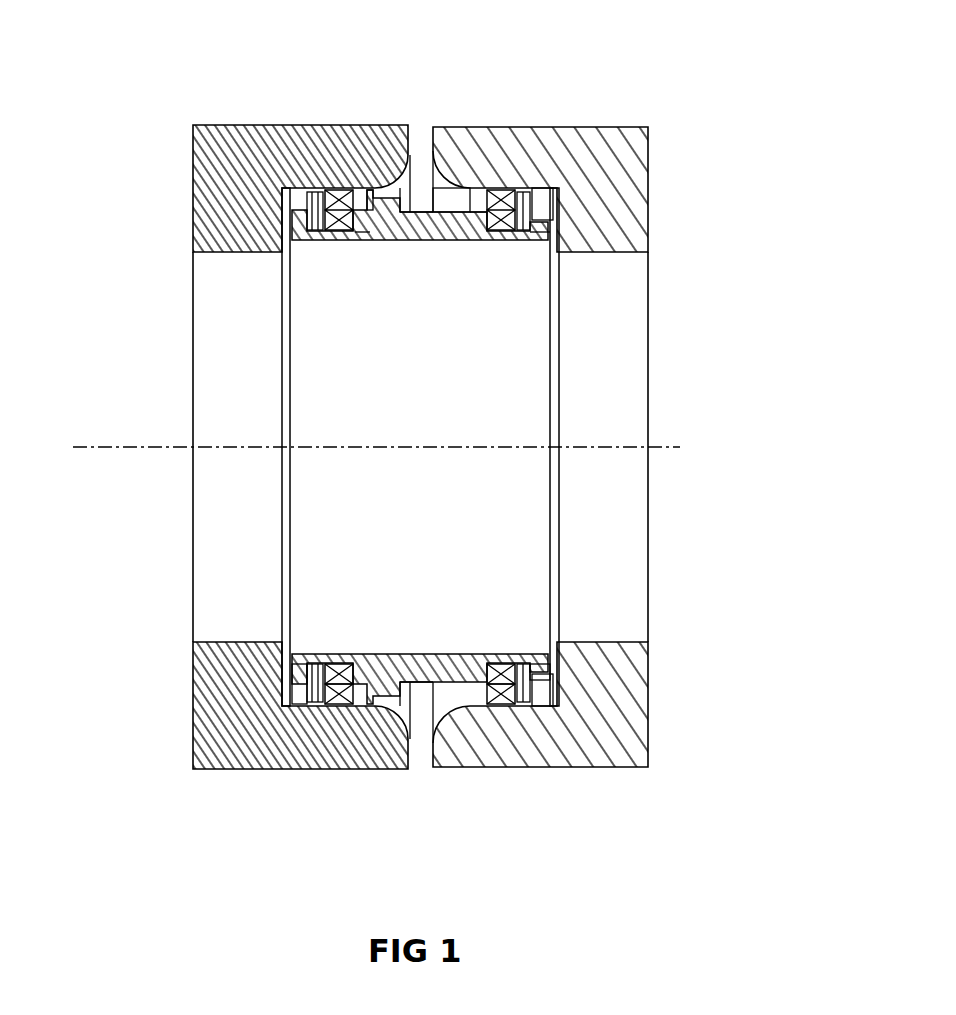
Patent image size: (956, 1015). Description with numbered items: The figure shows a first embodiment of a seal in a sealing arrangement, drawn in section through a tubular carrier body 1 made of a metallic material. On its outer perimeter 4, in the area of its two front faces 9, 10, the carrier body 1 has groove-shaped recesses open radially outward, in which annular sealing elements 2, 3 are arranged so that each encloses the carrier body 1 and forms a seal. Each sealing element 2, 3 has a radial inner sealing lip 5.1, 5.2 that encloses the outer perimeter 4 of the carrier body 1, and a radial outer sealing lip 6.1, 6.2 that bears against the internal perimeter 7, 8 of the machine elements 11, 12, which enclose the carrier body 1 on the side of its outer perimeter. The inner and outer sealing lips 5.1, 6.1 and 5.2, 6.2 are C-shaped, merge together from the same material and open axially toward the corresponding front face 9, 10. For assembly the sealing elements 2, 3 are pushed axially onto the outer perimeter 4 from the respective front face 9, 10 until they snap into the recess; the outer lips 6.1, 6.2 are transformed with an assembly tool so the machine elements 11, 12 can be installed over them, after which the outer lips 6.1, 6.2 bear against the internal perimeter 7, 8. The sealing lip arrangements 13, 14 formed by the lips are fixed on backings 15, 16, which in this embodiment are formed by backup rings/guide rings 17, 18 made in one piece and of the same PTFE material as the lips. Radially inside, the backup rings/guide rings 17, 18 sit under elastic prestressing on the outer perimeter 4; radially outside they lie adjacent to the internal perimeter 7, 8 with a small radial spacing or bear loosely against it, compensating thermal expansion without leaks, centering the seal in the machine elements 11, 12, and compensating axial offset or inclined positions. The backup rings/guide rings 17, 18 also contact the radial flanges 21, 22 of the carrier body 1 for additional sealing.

The carrier body 1 is at (404, 228).
The sealing element 2 is at (338, 208).
The sealing element 3 is at (492, 198).
The outer perimeter 4 is at (542, 230).
The inner sealing lip 5.1 is at (306, 677).
The inner sealing lip 5.2 is at (527, 680).
The outer sealing lip 6.1 is at (308, 706).
The outer sealing lip 6.2 is at (514, 706).
The internal perimeter 7 is at (370, 188).
The internal perimeter 8 is at (463, 190).
The front face 9 is at (302, 232).
The front face 10 is at (552, 250).
The machine element 11 is at (243, 187).
The machine element 12 is at (601, 208).
The sealing lip arrangement 13 is at (306, 207).
The sealing lip arrangement 14 is at (520, 207).
The backing 15 is at (349, 758).
The backing 16 is at (464, 758).
The backup ring/guide ring 17 is at (340, 704).
The backup ring/guide ring 18 is at (492, 685).
The radial flange 21 is at (362, 222).
The radial flange 22 is at (477, 210).